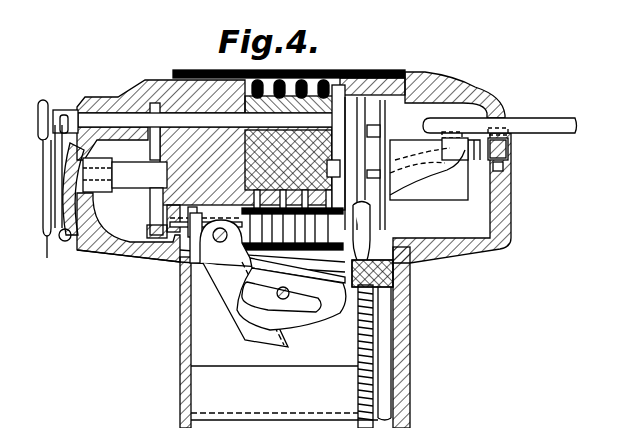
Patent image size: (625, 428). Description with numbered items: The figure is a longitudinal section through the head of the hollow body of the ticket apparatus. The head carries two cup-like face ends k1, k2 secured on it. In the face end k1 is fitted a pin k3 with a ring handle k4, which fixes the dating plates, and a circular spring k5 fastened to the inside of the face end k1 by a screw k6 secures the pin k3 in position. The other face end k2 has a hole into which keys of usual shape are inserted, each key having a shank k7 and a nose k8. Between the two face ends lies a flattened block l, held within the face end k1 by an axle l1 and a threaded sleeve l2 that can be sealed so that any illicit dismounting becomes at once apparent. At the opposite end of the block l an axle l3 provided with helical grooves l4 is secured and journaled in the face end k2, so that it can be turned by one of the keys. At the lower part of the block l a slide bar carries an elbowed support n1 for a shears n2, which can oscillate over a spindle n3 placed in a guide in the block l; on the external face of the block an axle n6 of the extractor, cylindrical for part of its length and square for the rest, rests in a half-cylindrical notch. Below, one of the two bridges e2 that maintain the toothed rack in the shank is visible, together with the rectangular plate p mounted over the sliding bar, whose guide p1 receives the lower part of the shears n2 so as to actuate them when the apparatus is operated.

The face end k2 is at (511, 208).
The pin k3 is at (105, 118).
The key shank k7 is at (525, 125).
The key nose k8 is at (508, 150).
The face end k1 is at (85, 250).
The ring handle k4 is at (47, 192).
The circular spring k5 is at (130, 258).
The screw k6 is at (158, 215).
The flattened block l is at (183, 74).
The axle l1 is at (122, 188).
The threaded sleeve l2 is at (65, 150).
The axle l3 is at (503, 167).
The helical grooves l4 is at (420, 183).
The elbowed support n1 is at (245, 340).
The shears n2 is at (315, 320).
The spindle n3 is at (205, 300).
The axle n6 is at (165, 258).
The bridge e2 is at (395, 280).
The plate p is at (353, 393).
The guide p1 is at (343, 297).